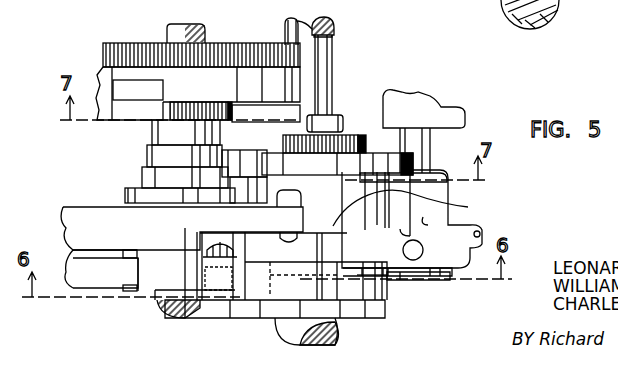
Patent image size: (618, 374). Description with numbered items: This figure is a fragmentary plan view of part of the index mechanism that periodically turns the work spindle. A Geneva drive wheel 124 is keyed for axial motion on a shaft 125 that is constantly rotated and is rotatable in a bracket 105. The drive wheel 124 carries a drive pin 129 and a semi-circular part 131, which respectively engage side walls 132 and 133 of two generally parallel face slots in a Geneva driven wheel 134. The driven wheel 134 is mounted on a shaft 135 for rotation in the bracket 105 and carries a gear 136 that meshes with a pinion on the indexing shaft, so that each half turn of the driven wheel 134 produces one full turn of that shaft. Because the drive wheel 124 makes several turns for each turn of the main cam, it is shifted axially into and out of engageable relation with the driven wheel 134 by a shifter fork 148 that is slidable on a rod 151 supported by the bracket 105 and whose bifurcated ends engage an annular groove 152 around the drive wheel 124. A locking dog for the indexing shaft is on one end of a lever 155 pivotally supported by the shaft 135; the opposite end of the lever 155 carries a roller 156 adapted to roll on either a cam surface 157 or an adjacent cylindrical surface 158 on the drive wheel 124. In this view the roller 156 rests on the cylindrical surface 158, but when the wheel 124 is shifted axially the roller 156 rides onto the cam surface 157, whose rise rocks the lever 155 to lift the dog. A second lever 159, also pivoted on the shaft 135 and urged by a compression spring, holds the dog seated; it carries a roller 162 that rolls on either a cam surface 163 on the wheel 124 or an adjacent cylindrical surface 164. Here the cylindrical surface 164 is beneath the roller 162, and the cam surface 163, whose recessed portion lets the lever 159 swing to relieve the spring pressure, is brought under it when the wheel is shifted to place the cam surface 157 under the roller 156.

The bracket 105 is at (443, 288).
The Geneva drive wheel 124 is at (357, 185).
The shaft 125 is at (321, 37).
The drive pin 129 is at (325, 122).
The semi-circular part 131 is at (347, 142).
The side wall of face slot 132 is at (163, 93).
The side wall of face slot 133 is at (120, 107).
The Geneva driven wheel 134 is at (204, 82).
The shaft 135 is at (182, 30).
The gear 136 is at (246, 52).
The shifter fork 148 is at (392, 256).
The rod 151 is at (416, 146).
The annular groove 152 is at (297, 252).
The lever 155 is at (99, 272).
The roller 156 is at (213, 308).
The cam surface 157 is at (262, 310).
The cylindrical surface 158 is at (288, 290).
The second lever 159 is at (115, 218).
The roller 162 is at (295, 208).
The cam surface 163 is at (414, 223).
The cylindrical surface 164 is at (352, 205).